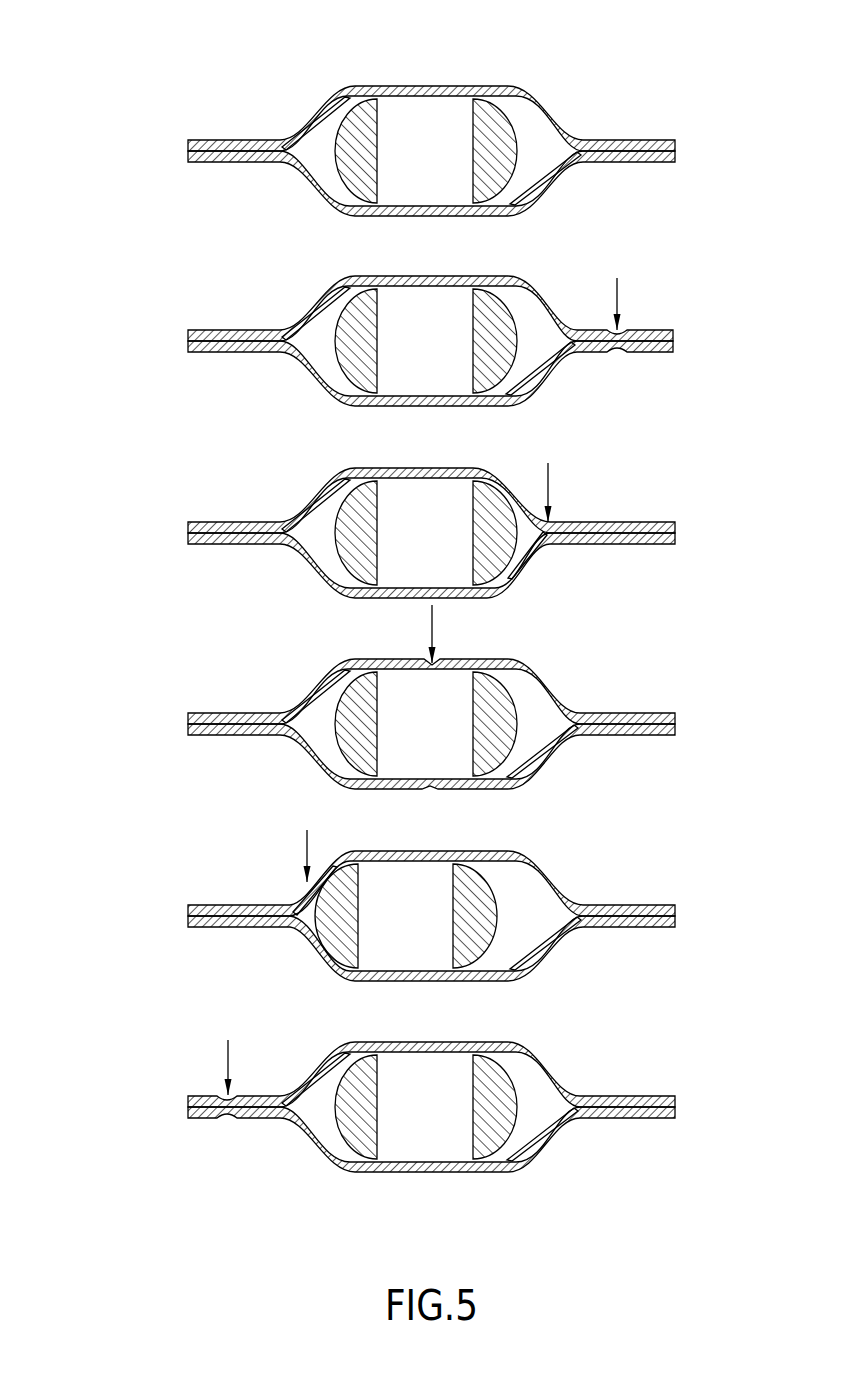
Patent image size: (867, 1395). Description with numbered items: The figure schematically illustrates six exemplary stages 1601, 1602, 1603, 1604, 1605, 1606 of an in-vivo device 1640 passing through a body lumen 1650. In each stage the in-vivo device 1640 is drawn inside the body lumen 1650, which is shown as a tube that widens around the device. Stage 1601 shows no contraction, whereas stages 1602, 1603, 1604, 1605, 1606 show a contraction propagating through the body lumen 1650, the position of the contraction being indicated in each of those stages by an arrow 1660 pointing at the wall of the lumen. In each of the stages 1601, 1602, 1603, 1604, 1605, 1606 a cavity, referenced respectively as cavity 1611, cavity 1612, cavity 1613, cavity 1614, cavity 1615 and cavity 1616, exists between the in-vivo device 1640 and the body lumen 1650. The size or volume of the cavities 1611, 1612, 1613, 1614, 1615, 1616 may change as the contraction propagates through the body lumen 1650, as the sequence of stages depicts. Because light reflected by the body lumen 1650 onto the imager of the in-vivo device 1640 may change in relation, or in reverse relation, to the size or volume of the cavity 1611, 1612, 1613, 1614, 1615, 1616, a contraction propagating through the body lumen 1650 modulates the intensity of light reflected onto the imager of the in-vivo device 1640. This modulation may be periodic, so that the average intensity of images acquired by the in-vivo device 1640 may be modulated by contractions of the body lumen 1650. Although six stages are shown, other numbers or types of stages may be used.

The first stage 1601 is at (167, 123).
The second stage 1602 is at (167, 314).
The third stage 1603 is at (167, 506).
The fourth stage 1604 is at (167, 697).
The fifth stage 1605 is at (167, 889).
The sixth stage 1606 is at (167, 1080).
The cavity 1611 is at (531, 150).
The cavity 1612 is at (531, 340).
The cavity 1613 is at (524, 534).
The cavity 1614 is at (532, 724).
The cavity 1615 is at (532, 916).
The cavity 1616 is at (532, 1107).
The in-vivo device 1640 is at (437, 133).
The body lumen 1650 is at (413, 87).
The arrow 1660 is at (617, 287).